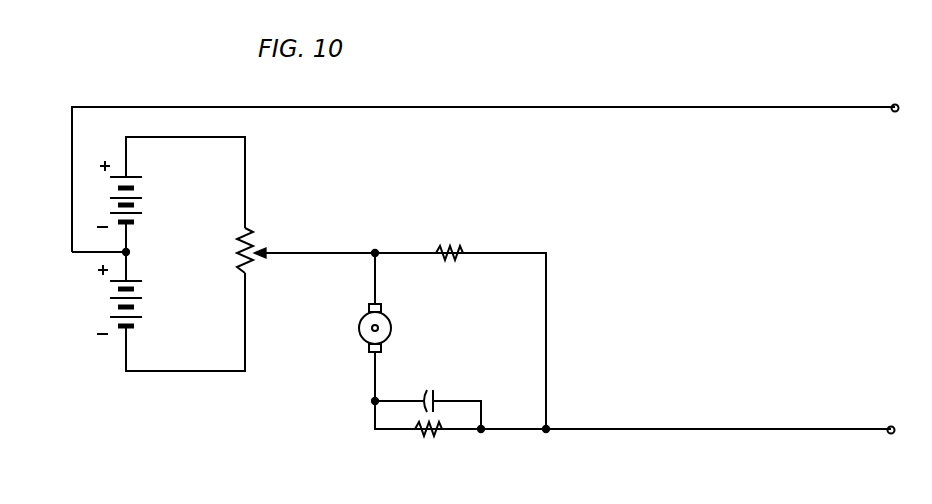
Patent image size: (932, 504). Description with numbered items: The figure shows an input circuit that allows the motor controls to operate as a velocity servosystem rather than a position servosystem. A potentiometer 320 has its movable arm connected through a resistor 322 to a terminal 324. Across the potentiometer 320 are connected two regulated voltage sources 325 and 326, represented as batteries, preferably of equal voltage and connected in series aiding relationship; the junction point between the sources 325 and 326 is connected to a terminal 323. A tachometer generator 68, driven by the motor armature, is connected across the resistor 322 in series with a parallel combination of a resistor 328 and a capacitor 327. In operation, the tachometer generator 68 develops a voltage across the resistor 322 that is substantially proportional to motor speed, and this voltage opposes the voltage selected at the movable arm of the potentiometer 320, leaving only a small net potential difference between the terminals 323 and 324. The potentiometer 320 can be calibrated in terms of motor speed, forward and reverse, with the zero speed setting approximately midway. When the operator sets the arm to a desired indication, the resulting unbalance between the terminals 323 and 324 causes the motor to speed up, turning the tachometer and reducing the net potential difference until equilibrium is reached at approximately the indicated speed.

The tachometer generator 68 is at (391, 325).
The potentiometer 320 is at (254, 265).
The resistor 322 is at (450, 246).
The terminal 323 is at (894, 112).
The terminal 324 is at (891, 434).
The regulated voltage source 325 is at (143, 199).
The regulated voltage source 326 is at (137, 308).
The capacitor 327 is at (432, 392).
The resistor 328 is at (428, 438).